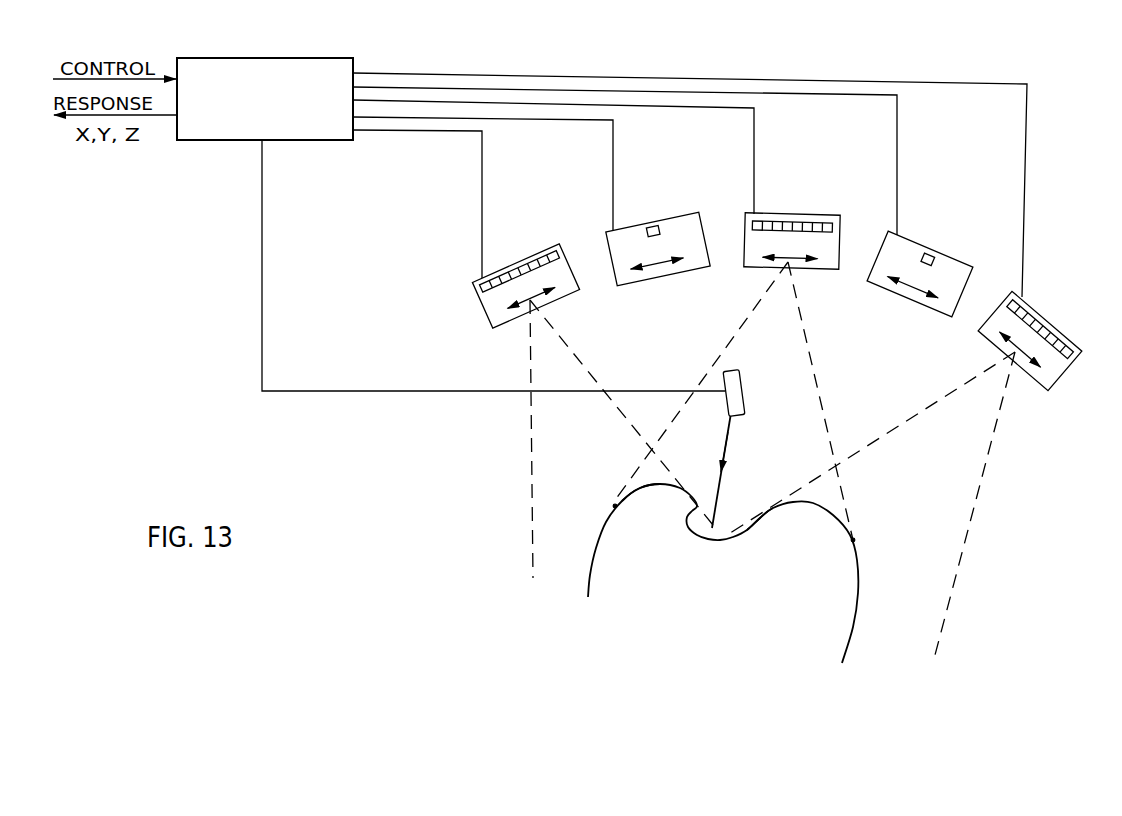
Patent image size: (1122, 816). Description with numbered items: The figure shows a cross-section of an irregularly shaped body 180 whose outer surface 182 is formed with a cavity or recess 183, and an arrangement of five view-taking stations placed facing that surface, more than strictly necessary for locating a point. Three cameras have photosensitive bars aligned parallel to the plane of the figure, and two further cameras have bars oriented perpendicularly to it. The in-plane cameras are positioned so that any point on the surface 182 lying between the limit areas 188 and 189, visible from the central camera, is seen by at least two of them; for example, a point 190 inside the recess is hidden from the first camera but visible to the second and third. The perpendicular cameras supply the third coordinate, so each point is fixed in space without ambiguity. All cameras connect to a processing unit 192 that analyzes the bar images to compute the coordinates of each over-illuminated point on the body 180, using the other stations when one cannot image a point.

The processing unit 192 is at (334, 27).
The point 190 is at (707, 539).
The body 180 is at (576, 579).
The outer surface 182 is at (643, 487).
The cavity or recess 183 is at (729, 514).
The limit area 188 is at (615, 505).
The limit area 189 is at (853, 540).